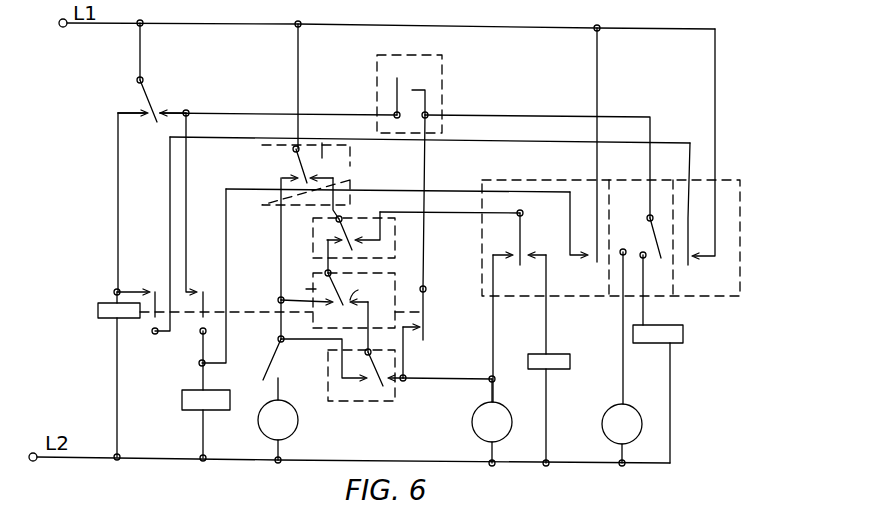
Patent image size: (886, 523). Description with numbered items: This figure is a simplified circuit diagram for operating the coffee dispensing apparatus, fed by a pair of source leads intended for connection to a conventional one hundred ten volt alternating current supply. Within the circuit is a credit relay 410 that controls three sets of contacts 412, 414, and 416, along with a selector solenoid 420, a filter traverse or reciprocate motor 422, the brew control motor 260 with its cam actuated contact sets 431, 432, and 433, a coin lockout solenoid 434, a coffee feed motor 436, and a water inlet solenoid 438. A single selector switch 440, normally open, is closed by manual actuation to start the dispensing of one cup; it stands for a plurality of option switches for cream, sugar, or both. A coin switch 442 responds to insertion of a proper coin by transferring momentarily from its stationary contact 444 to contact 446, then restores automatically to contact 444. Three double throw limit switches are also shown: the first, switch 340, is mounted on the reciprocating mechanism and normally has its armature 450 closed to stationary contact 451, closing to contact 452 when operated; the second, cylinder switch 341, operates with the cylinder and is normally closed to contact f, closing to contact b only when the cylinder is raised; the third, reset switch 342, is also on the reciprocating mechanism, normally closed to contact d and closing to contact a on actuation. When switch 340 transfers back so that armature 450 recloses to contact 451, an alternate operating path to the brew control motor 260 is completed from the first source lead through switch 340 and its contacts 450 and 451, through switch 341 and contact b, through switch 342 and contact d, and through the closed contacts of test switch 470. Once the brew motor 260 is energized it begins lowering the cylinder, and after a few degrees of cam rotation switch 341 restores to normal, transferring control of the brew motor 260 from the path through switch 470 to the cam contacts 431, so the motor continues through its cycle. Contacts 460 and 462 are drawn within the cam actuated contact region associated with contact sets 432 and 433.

The brew control motor 260 is at (480, 430).
The double throw limit switch 340 is at (350, 173).
The cylinder switch 341 is at (313, 243).
The reset switch 342 is at (395, 283).
The credit relay 410 is at (98, 311).
The contact set 412 is at (156, 279).
The contact set 414 is at (197, 289).
The contact set 416 is at (421, 333).
The selector solenoid 420 is at (186, 408).
The filter traverse motor 422 is at (292, 422).
The cam actuated contact set 431 is at (522, 244).
The cam actuated contact set 432 is at (649, 217).
The cam actuated contact set 433 is at (727, 236).
The coin lockout solenoid 434 is at (560, 370).
The coffee feed motor 436 is at (608, 428).
The water inlet solenoid 438 is at (683, 336).
The selector switch 440 is at (405, 90).
The coin switch 442 is at (143, 78).
The stationary contact 444 is at (163, 111).
The contact 446 is at (146, 112).
The armature 450 is at (294, 146).
The stationary contact 451 is at (341, 137).
The contact 452 is at (296, 178).
The relay contact 460 is at (618, 272).
The relay contact 462 is at (652, 283).
The test switch 470 is at (271, 373).